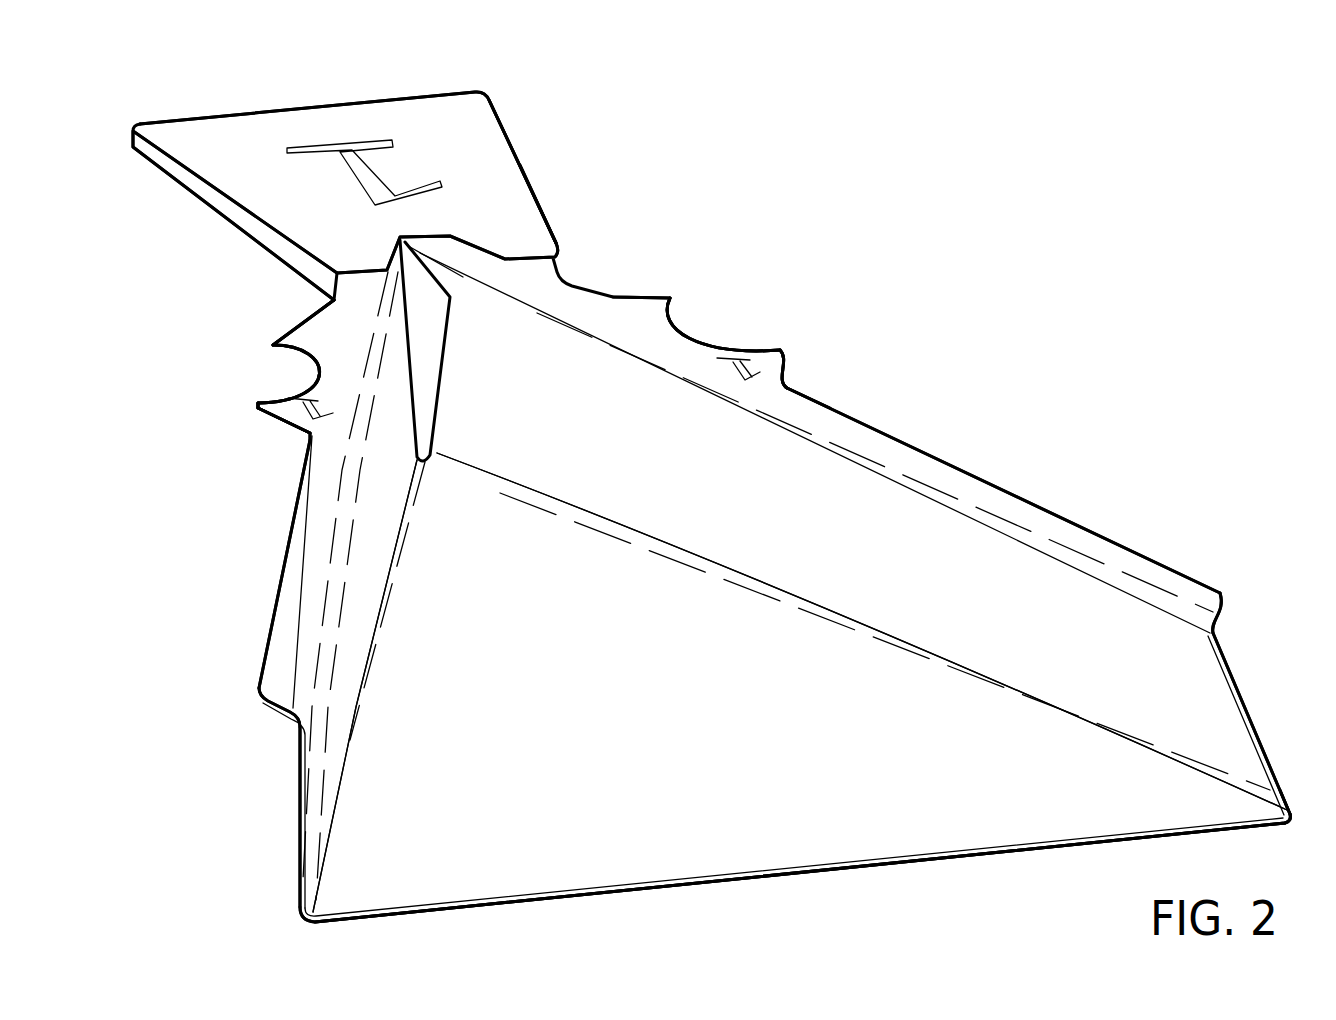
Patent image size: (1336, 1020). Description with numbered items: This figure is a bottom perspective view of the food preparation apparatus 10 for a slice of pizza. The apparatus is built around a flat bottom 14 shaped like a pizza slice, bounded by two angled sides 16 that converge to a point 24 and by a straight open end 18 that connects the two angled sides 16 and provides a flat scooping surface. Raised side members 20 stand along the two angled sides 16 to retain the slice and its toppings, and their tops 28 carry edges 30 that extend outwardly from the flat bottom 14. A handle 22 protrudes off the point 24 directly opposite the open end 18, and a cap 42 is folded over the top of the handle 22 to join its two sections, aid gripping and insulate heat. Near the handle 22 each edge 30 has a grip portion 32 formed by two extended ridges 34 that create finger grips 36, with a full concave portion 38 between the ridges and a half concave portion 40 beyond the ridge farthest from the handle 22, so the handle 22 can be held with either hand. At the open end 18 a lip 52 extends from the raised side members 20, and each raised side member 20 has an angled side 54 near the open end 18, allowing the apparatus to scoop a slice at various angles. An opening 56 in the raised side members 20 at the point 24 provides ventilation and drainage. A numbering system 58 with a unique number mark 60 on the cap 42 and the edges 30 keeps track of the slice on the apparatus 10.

The food preparation apparatus 10 is at (1077, 183).
The flat bottom 14 is at (800, 687).
The angled sides 16 is at (383, 633).
The open end 18 is at (727, 890).
The raised side members 20 is at (370, 548).
The handle 22 is at (530, 122).
The point 24 is at (272, 284).
The tops 28 is at (290, 723).
The edges 30 is at (298, 575).
The grip portions 32 is at (238, 360).
The extended ridges 34 is at (268, 345).
The finger grips 36 is at (252, 386).
The full concave portion 38 is at (303, 362).
The half concave portion 40 is at (285, 435).
The cap 42 is at (403, 108).
The lip 52 is at (1295, 813).
The angled side 54 is at (297, 818).
The opening 56 is at (430, 327).
The numbering system 58 is at (593, 160).
The unique number mark 60 is at (345, 158).